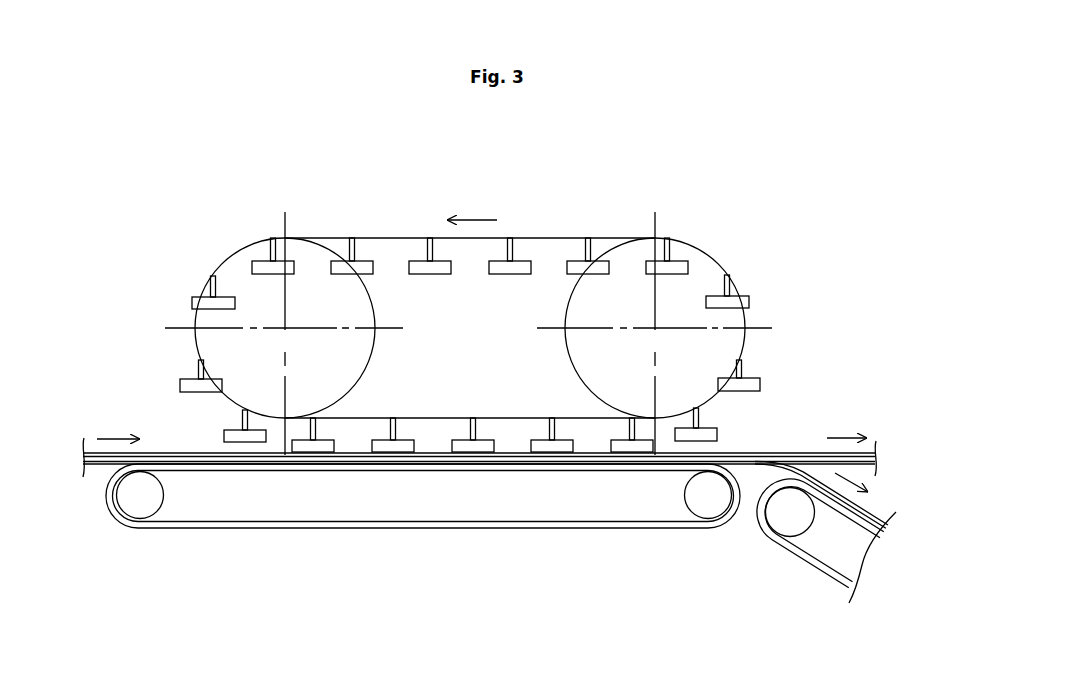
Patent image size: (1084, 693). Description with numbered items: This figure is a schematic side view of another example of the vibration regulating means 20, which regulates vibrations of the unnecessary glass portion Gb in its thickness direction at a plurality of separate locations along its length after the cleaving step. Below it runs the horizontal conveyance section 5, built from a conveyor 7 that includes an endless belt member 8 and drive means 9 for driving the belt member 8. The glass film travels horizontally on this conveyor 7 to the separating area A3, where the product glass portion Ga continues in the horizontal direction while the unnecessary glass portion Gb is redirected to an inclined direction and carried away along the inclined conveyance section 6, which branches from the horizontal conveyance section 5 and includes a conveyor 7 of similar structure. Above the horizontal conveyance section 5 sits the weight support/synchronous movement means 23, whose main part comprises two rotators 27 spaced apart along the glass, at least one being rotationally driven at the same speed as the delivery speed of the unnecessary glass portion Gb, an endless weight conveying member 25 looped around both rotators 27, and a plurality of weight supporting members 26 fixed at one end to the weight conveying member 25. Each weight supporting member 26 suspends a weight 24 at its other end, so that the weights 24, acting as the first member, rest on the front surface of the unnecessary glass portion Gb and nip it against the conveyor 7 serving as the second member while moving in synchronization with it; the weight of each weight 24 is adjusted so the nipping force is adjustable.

The vibration regulating means 20 is at (752, 230).
The weight support/synchronous movement means 23 is at (609, 236).
The weight 24 is at (428, 268).
The endless weight conveying member 25 is at (377, 237).
The weight supporting member 26 is at (431, 238).
The rotator 27 is at (366, 372).
The separating area A3 is at (770, 430).
The product glass portion Ga is at (203, 457).
The unnecessary glass portion Gb is at (164, 457).
The horizontal conveyance section 5 is at (141, 542).
The inclined conveyance section 6 is at (824, 584).
The conveyor 7 is at (492, 531).
The endless belt member 8 is at (290, 526).
The drive means 9 is at (711, 507).